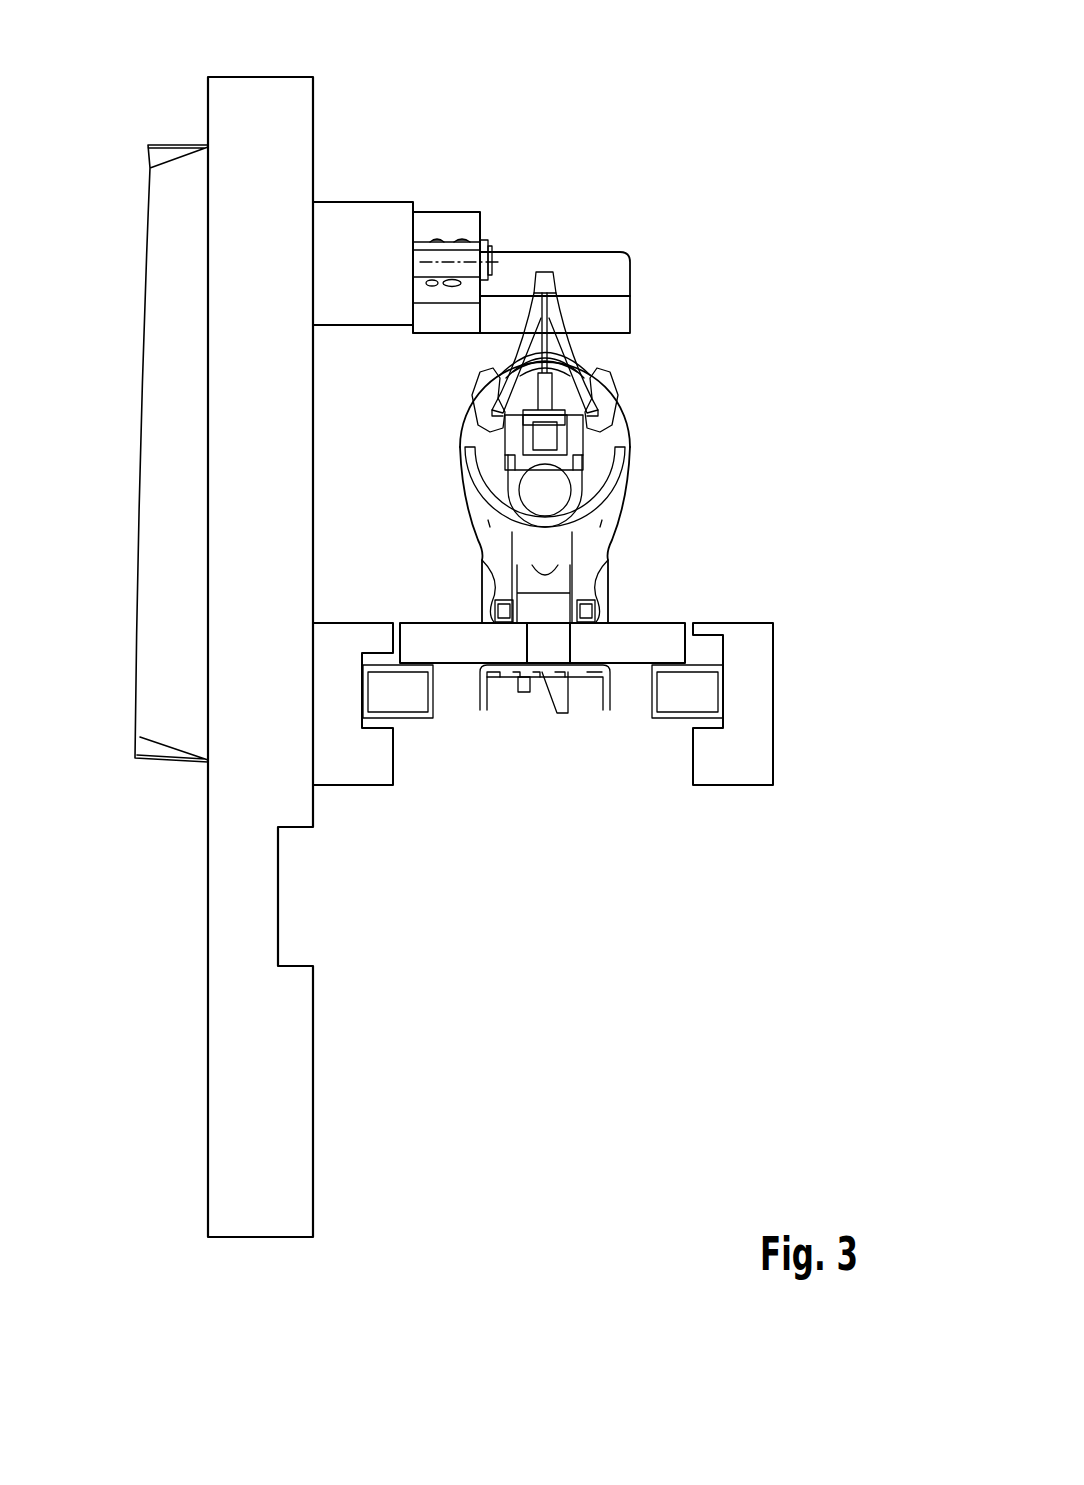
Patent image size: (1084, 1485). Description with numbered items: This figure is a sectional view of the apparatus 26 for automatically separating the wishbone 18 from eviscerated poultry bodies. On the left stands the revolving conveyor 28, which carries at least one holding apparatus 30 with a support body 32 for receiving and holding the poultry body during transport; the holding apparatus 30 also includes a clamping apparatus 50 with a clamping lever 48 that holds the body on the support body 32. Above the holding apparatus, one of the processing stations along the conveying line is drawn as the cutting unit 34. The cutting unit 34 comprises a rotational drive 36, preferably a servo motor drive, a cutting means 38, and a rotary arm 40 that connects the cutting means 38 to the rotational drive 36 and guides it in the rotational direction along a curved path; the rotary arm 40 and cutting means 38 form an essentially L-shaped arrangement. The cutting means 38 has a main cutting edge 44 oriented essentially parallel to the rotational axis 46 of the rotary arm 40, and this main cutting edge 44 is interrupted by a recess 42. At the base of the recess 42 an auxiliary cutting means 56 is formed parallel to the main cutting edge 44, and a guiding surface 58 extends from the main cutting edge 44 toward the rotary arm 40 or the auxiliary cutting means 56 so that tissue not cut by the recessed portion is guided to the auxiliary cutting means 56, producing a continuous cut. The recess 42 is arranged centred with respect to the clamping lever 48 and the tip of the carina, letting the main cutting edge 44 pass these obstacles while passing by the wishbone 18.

The wishbone 18 is at (567, 345).
The apparatus 26 is at (533, 103).
The revolving conveyor 28 is at (282, 1132).
The holding apparatus 30 is at (673, 633).
The support body 32 is at (597, 446).
The cutting unit 34 is at (607, 222).
The rotational drive 36 is at (368, 222).
The cutting means 38 is at (620, 278).
The rotary arm 40 is at (439, 223).
The recess 42 is at (553, 313).
The main cutting edge 44 is at (423, 334).
The rotational axis 46 is at (472, 257).
The clamping lever 48 is at (547, 372).
The clamping apparatus 50 is at (523, 402).
The auxiliary cutting means 56 is at (546, 298).
The guiding surface 58 is at (620, 316).